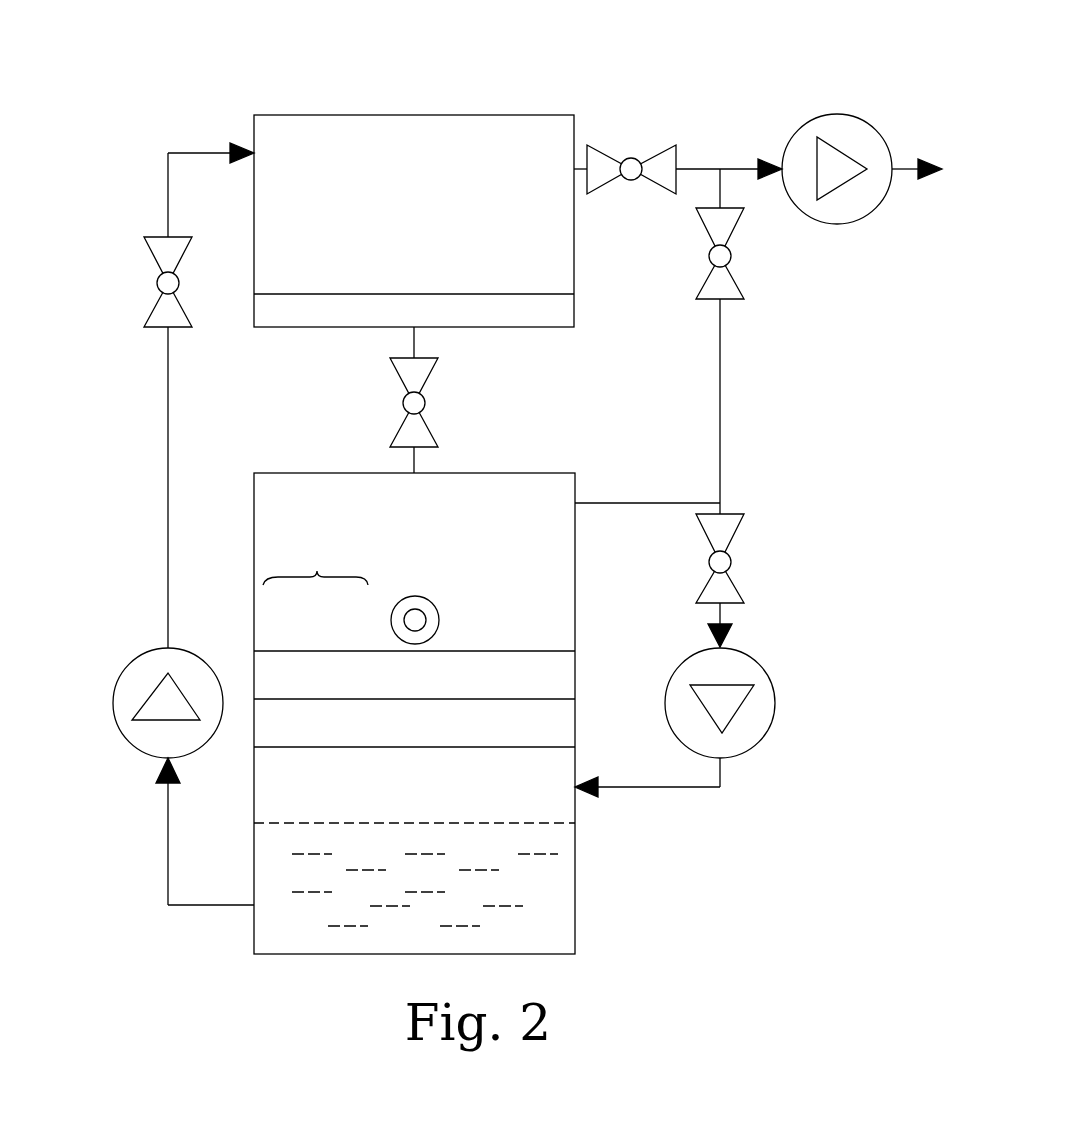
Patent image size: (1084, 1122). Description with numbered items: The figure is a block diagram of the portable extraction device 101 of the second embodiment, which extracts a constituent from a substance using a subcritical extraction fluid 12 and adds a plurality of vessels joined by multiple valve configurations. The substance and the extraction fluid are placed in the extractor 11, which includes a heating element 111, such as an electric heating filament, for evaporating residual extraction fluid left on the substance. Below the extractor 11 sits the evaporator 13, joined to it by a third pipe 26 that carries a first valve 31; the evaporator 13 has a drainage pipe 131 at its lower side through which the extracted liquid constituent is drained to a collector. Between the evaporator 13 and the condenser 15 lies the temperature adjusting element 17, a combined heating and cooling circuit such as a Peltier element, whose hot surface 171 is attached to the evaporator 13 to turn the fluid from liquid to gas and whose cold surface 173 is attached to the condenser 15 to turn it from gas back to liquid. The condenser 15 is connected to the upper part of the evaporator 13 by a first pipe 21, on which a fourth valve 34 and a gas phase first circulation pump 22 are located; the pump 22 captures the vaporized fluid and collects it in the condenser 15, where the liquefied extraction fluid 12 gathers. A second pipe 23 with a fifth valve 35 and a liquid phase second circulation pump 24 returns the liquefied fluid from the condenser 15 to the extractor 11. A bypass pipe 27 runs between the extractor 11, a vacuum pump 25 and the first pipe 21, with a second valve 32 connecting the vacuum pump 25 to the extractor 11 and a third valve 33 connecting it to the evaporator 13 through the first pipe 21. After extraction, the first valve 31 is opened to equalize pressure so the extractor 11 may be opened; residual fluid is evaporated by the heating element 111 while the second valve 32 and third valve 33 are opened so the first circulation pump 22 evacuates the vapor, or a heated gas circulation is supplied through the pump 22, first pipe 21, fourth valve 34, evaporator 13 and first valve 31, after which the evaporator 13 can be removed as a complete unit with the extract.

The portable extraction device 101 is at (872, 44).
The extractor 11 is at (532, 245).
The heating element 111 is at (536, 311).
The extraction fluid 12 is at (533, 896).
The evaporator 13 is at (536, 580).
The drainage pipe 131 is at (419, 620).
The condenser 15 is at (538, 806).
The temperature adjusting element 17 is at (315, 565).
The hot surface 171 is at (297, 682).
The cold surface 173 is at (332, 722).
The first pipe 21 is at (653, 501).
The first circulation pump 22 is at (728, 702).
The second pipe 23 is at (167, 521).
The second circulation pump 24 is at (155, 705).
The vacuum pump 25 is at (841, 206).
The third pipe 26 is at (416, 343).
The bypass pipe 27 is at (723, 385).
The first valve 31 is at (416, 405).
The second valve 32 is at (661, 160).
The third valve 33 is at (722, 288).
The fourth valve 34 is at (726, 592).
The fifth valve 35 is at (160, 311).